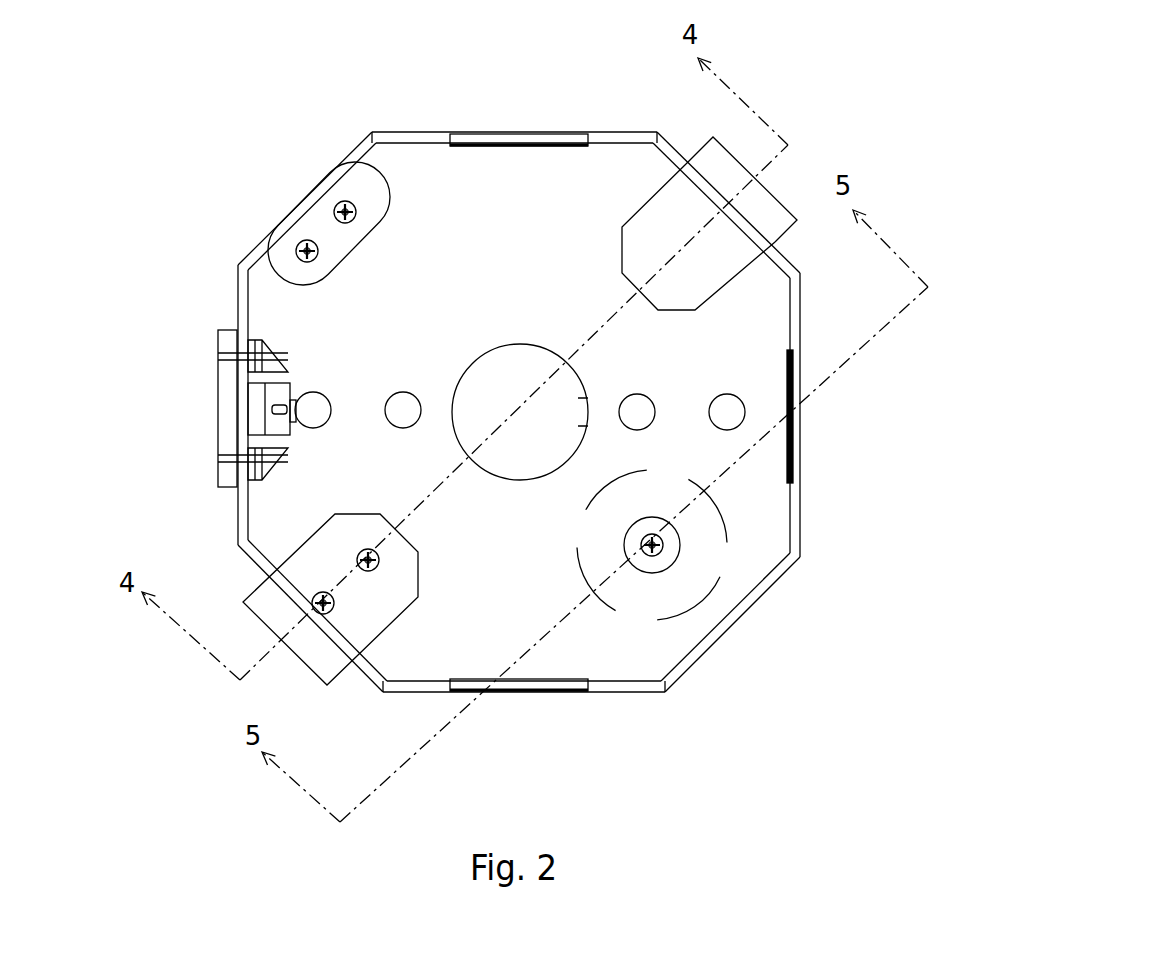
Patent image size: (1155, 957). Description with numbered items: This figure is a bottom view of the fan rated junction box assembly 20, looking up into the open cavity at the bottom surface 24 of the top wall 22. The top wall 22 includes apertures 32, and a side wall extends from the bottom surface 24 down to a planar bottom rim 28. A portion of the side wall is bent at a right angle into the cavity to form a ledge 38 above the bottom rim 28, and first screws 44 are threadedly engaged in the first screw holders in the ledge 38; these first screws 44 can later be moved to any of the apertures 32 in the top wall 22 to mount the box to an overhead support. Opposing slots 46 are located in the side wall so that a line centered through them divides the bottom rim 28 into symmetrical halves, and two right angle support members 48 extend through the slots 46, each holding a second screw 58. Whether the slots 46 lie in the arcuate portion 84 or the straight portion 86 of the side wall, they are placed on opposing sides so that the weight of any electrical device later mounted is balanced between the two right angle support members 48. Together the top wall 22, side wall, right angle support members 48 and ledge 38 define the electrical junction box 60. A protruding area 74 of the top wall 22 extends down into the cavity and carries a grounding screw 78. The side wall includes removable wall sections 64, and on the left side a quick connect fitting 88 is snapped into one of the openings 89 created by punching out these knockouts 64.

The fan rated junction box assembly 20 is at (922, 375).
The top wall 22 is at (520, 213).
The bottom surface 24 is at (410, 256).
The bottom rim 28 is at (800, 563).
The apertures 32 is at (399, 394).
The ledge 38 is at (345, 194).
The first screw 44 is at (297, 246).
The opposing slots 46 is at (775, 247).
The right angle support members 48 is at (660, 226).
The second screw 58 is at (333, 610).
The electrical junction box 60 is at (747, 638).
The removable wall sections 64 is at (473, 403).
The protruding area 74 is at (630, 508).
The grounding screw 78 is at (661, 553).
The arcuate portion 84 is at (678, 153).
The straight portion 86 is at (800, 510).
The quick connect fitting 88 is at (222, 378).
The openings 89 is at (248, 342).